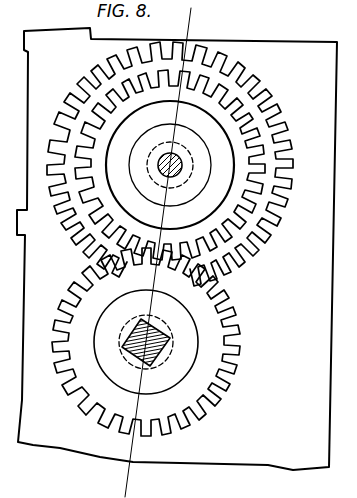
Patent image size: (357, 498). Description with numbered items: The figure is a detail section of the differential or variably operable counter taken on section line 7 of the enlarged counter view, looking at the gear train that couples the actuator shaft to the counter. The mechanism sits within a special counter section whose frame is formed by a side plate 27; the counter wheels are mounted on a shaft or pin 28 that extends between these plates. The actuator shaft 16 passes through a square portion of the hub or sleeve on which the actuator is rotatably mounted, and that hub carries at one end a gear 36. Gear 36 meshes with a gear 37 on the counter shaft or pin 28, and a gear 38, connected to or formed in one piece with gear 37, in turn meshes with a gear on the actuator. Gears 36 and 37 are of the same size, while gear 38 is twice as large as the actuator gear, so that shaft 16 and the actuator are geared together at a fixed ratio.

The section line 7- 7 is at (173, 27).
The shaft 16 is at (168, 336).
The side plate 27 is at (205, 440).
The shaft or pin 28 is at (182, 172).
The gear 36 is at (198, 385).
The gear 37 is at (222, 232).
The gear 38 is at (260, 212).